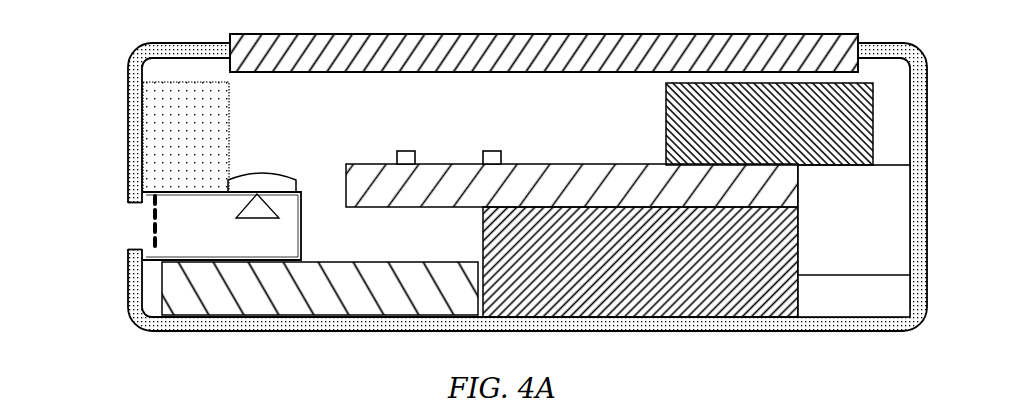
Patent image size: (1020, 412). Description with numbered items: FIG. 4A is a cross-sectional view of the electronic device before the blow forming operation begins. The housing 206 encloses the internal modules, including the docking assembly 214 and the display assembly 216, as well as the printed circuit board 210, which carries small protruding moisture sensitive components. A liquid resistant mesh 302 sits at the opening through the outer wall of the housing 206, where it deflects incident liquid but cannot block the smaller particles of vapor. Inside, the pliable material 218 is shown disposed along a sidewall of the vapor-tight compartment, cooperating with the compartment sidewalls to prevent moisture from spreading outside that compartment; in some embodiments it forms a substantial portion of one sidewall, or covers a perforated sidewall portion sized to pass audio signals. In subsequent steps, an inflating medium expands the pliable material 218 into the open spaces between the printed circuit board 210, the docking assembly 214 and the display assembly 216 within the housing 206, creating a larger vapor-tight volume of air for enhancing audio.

The housing 206 is at (129, 92).
The display assembly 216 is at (393, 63).
The docking assembly 214 is at (206, 150).
The pliable material 218 is at (261, 172).
The liquid resistant mesh 302 is at (152, 221).
The printed circuit board 210 is at (478, 194).